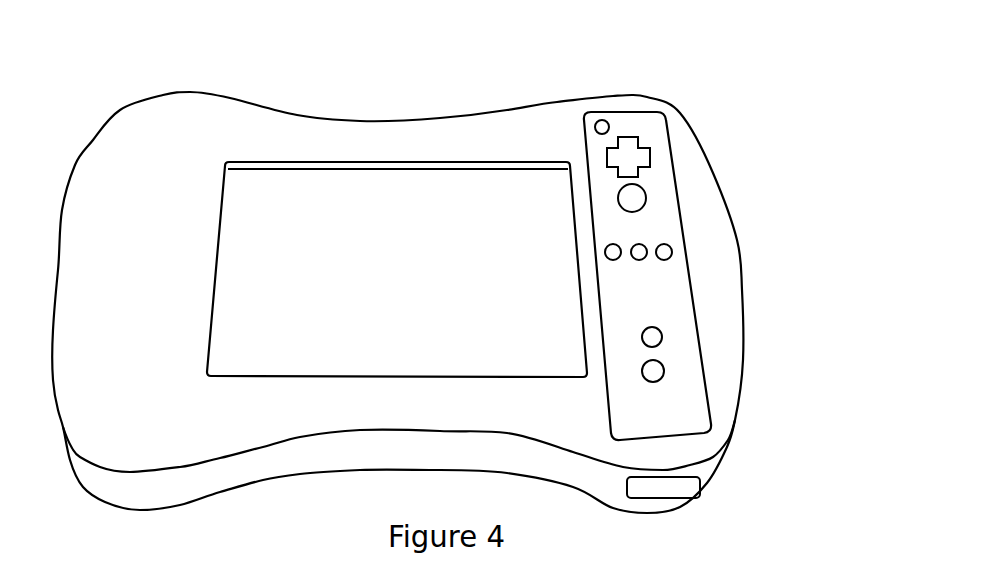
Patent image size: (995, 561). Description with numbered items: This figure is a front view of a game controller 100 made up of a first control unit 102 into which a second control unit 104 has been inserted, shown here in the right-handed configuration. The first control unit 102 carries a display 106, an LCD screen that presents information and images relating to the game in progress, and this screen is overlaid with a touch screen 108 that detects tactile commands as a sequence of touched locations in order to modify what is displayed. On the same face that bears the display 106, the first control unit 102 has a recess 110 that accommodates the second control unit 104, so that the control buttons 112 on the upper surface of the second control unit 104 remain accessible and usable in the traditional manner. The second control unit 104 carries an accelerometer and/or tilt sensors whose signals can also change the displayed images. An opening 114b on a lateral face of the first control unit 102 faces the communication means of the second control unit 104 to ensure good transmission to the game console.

The game controller 100 is at (449, 271).
The first control unit 102 is at (140, 183).
The second control unit 104 is at (637, 277).
The display 106 is at (468, 200).
The touch screen 108 is at (415, 276).
The recess 110 is at (635, 110).
The control buttons 112 is at (654, 330).
The opening 114b is at (672, 488).